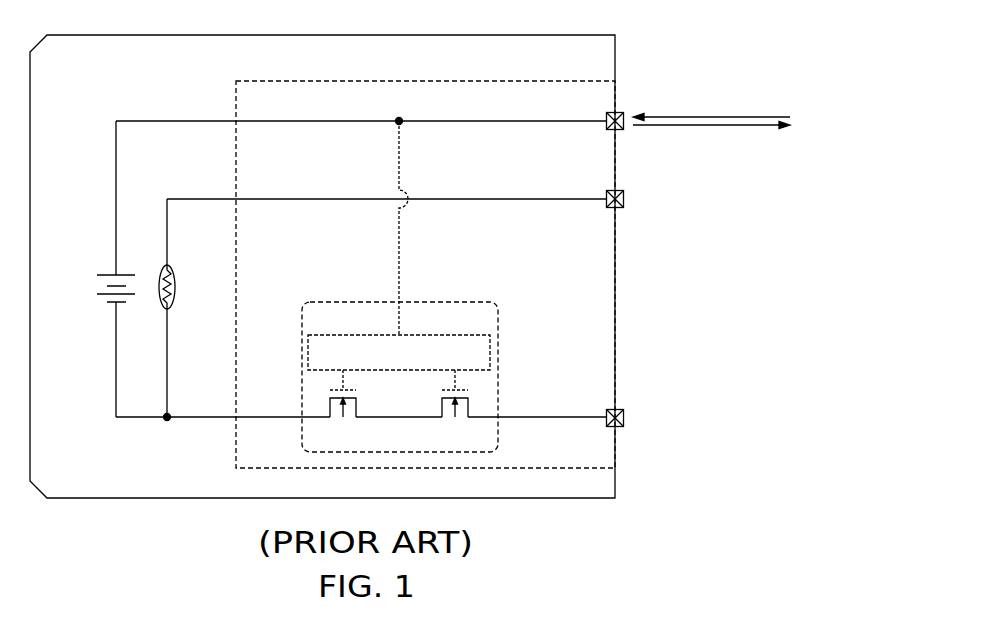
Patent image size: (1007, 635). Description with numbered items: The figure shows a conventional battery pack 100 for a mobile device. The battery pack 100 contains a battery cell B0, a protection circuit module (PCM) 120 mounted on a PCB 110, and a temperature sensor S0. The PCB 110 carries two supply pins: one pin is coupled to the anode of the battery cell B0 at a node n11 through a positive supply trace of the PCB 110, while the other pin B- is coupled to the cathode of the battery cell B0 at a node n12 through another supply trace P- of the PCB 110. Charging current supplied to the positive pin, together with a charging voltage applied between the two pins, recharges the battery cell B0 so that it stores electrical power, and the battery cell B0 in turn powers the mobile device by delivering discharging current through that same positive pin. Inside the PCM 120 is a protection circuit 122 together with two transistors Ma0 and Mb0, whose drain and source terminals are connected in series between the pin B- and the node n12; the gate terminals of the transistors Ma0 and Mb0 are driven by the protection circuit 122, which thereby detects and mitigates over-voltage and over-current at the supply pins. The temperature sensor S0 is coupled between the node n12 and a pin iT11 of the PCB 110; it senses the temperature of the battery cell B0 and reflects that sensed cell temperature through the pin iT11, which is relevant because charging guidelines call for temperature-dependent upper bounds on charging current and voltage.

The battery pack 100 is at (320, 34).
The PCB 110 is at (236, 157).
The protection circuit module (PCM) 120 is at (451, 303).
The protection circuit 122 is at (370, 335).
The battery cell B0 is at (102, 288).
The temperature sensor S0 is at (182, 287).
The node n11 is at (399, 110).
The node n12 is at (167, 430).
The transistor Ma0 is at (344, 405).
The transistor Mb0 is at (456, 405).
The supply pin B- is at (606, 409).
The pin iT11 is at (607, 208).
The supply trace P- is at (532, 427).